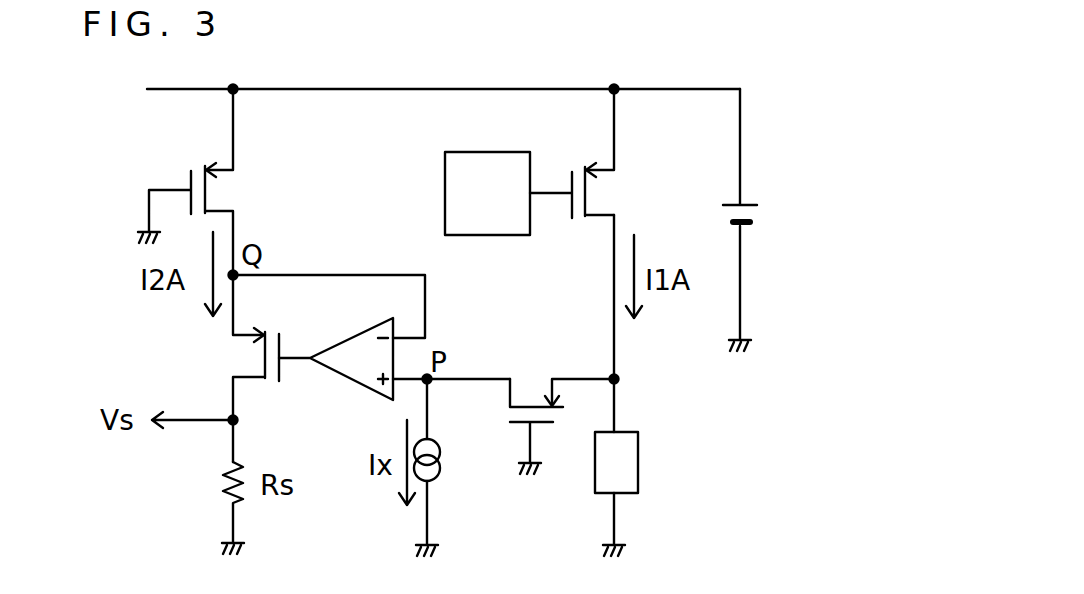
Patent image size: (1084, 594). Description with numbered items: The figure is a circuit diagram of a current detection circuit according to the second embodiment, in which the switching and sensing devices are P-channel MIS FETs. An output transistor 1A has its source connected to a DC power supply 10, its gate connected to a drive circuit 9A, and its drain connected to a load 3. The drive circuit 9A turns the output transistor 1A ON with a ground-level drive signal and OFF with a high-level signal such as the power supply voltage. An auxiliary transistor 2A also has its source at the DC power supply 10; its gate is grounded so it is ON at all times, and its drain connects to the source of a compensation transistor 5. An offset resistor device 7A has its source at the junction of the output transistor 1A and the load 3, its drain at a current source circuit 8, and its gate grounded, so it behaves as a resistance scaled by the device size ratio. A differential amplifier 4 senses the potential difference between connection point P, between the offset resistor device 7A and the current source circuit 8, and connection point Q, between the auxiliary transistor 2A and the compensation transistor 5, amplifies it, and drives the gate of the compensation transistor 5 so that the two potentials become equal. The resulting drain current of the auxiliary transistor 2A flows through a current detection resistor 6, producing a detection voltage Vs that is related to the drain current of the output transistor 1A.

The output transistor 1A is at (612, 193).
The auxiliary transistor 2A is at (232, 191).
The load 3 is at (640, 432).
The differential amplifier 4 is at (378, 392).
The compensation transistor 5 is at (236, 355).
The current detection resistor 6 is at (228, 476).
The offset resistor device 7A is at (531, 378).
The current source circuit 8 is at (440, 478).
The drive circuit 9A is at (445, 194).
The DC power supply 10 is at (756, 204).